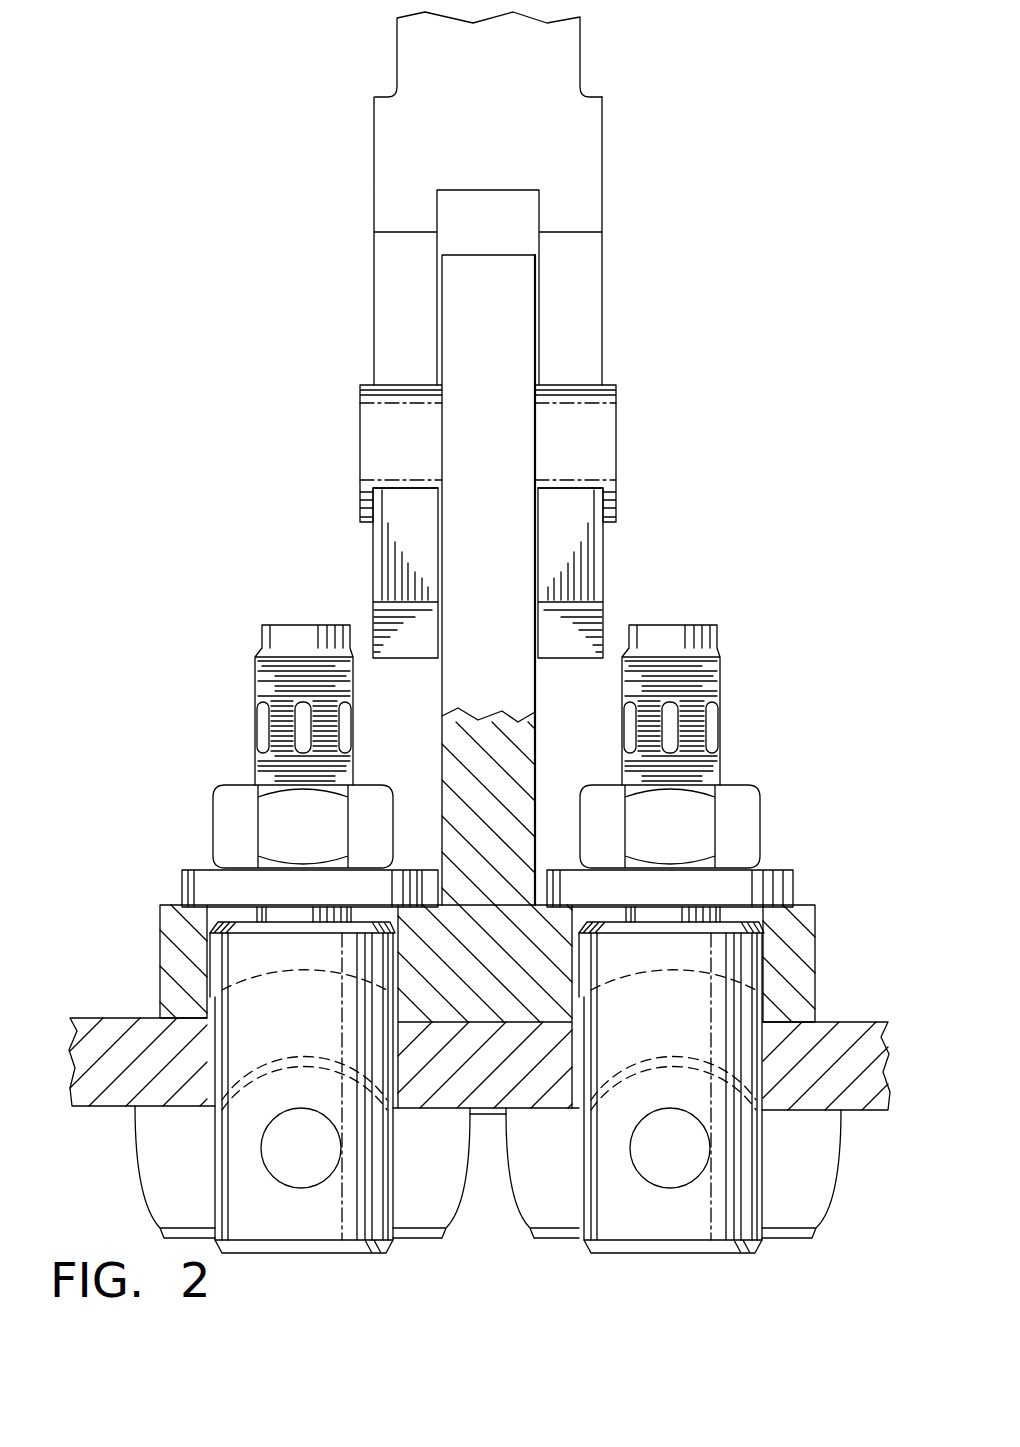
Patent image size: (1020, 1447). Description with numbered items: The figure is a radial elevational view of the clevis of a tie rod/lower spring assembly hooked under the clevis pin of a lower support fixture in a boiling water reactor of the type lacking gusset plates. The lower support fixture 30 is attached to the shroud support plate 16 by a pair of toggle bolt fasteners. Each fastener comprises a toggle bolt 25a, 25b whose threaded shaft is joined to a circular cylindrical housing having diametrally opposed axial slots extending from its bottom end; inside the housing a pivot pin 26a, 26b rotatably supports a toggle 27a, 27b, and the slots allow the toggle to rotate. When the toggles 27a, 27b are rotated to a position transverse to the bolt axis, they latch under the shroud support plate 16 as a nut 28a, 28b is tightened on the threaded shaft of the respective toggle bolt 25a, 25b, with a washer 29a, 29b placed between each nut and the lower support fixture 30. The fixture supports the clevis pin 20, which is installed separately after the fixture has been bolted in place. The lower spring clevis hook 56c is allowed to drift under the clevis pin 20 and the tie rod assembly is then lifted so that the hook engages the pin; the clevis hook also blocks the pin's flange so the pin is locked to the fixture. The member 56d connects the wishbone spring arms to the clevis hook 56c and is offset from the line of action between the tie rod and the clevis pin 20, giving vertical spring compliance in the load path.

The shroud support plate 16 is at (131, 1037).
The clevis pin 20 is at (370, 445).
The toggle bolt 25a is at (255, 686).
The toggle bolt 25b is at (722, 688).
The pivot pin 26a is at (304, 1175).
The pivot pin 26b is at (671, 1180).
The toggle 27a is at (157, 1158).
The toggle 27b is at (822, 1178).
The nut 28a is at (237, 812).
The nut 28b is at (740, 815).
The washer 29a is at (195, 886).
The washer 29b is at (783, 892).
The lower support fixture 30 is at (515, 265).
The clevis hook 56c is at (385, 300).
The connecting member 56d is at (405, 62).